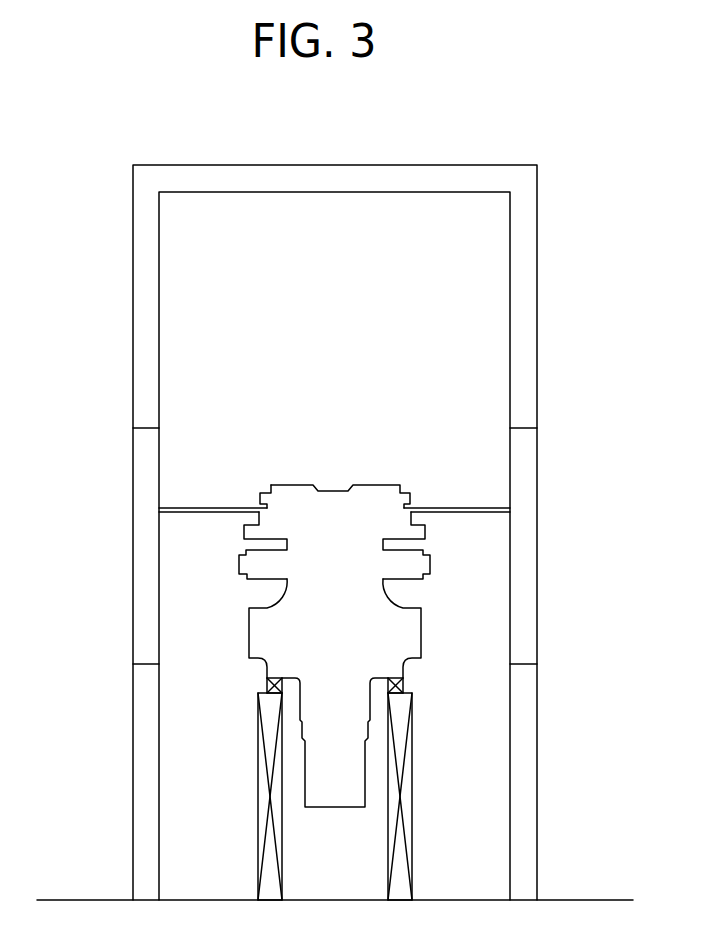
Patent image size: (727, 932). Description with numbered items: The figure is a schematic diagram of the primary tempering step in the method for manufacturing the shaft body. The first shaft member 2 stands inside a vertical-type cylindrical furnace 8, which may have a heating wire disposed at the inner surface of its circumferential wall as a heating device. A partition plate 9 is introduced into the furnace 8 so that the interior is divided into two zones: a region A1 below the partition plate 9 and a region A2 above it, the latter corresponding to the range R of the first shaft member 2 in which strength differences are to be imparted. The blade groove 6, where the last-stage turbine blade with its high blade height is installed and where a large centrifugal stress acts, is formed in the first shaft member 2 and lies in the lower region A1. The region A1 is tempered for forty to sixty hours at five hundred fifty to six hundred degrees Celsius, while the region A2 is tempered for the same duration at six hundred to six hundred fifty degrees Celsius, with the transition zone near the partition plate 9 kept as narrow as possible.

The vertical-type cylindrical furnace 8 is at (520, 306).
The partition plate 9 is at (465, 503).
The first shaft member 2 is at (433, 558).
The blade groove 6 is at (402, 637).
The region below the partition plate A1 is at (187, 582).
The region above the partition plate A2 is at (202, 338).